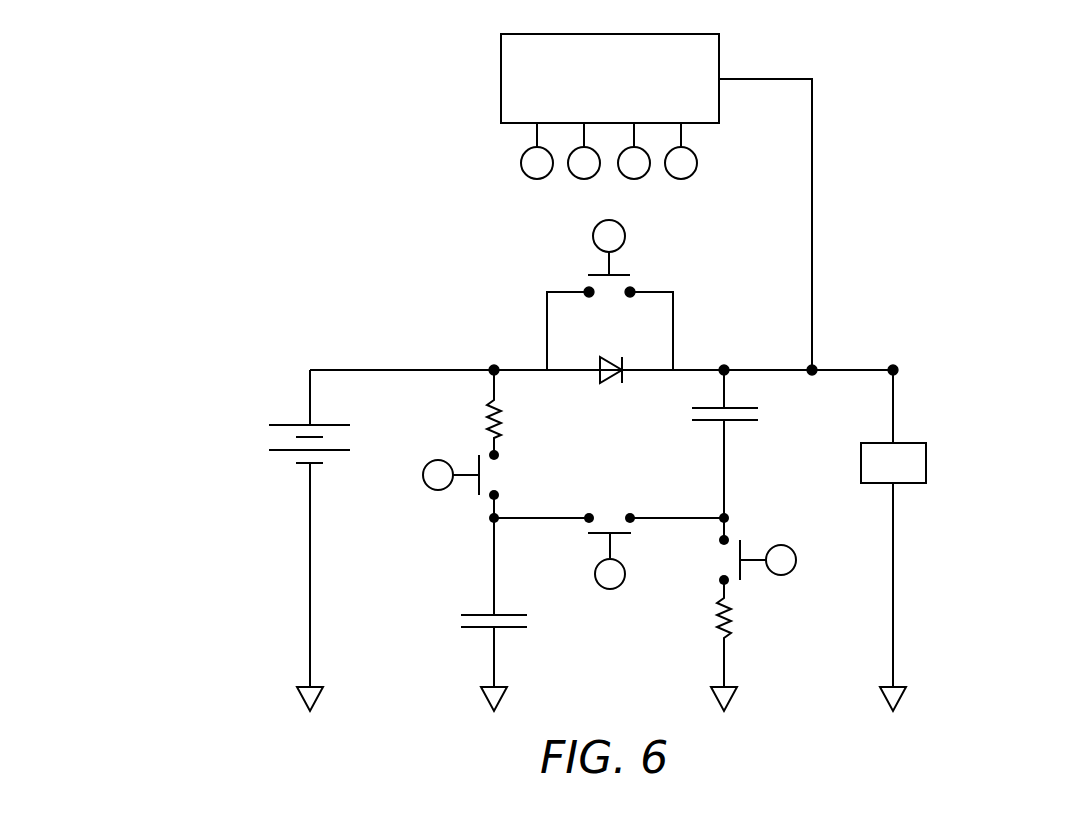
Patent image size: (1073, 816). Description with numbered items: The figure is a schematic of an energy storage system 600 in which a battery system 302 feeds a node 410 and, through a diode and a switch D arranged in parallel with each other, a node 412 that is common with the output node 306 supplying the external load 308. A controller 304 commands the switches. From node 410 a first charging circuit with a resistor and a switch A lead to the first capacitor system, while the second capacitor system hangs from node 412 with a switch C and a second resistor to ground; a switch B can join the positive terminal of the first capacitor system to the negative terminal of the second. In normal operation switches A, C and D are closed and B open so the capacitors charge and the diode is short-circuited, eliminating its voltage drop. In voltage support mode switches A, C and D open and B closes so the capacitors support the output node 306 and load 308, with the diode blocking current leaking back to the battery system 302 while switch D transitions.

The energy storage system 600 is at (982, 172).
The controller 304 is at (703, 34).
The battery system 302 is at (276, 420).
The node 410 is at (488, 365).
The node 412 is at (728, 362).
The output node 306 is at (896, 362).
The external load 308 is at (912, 443).